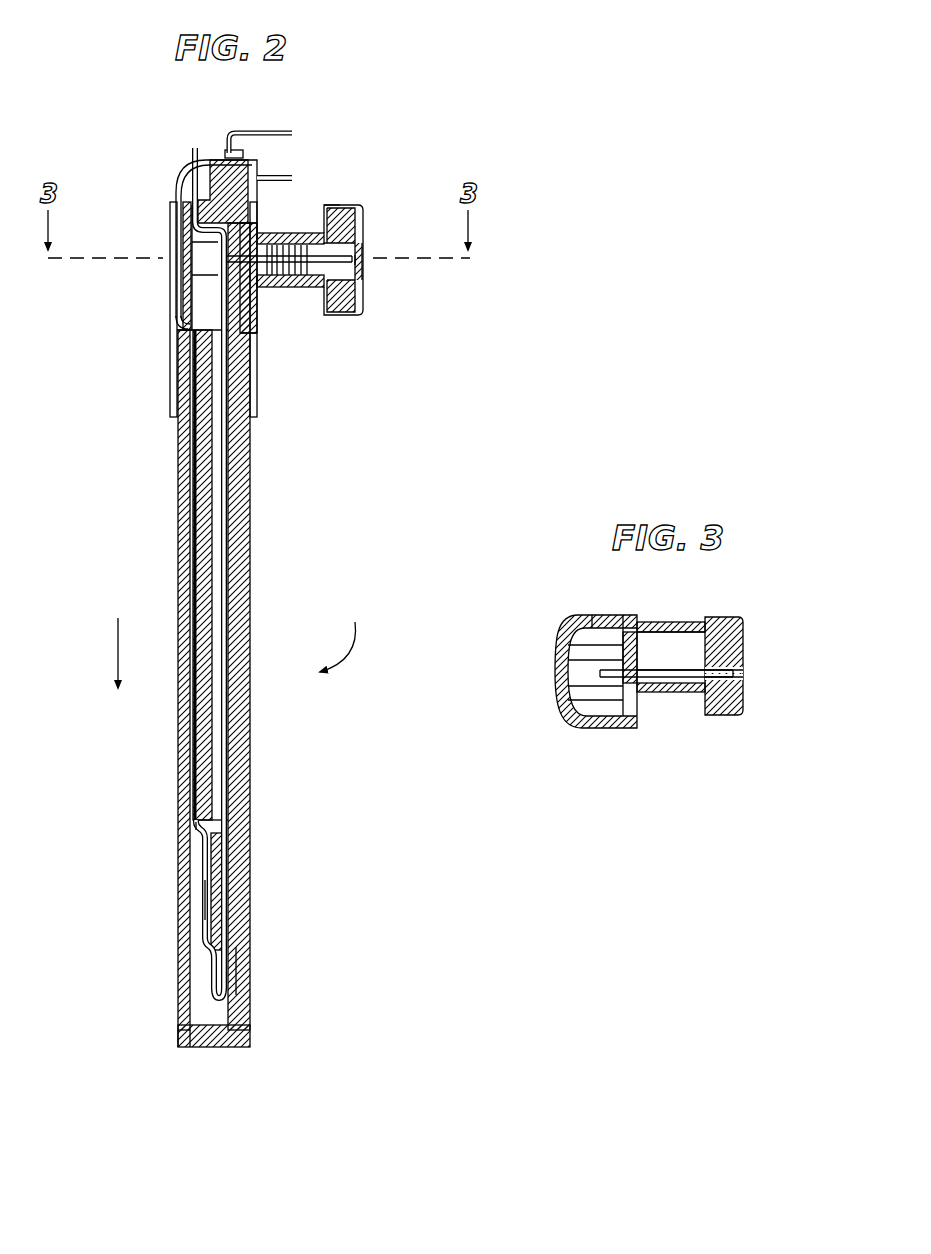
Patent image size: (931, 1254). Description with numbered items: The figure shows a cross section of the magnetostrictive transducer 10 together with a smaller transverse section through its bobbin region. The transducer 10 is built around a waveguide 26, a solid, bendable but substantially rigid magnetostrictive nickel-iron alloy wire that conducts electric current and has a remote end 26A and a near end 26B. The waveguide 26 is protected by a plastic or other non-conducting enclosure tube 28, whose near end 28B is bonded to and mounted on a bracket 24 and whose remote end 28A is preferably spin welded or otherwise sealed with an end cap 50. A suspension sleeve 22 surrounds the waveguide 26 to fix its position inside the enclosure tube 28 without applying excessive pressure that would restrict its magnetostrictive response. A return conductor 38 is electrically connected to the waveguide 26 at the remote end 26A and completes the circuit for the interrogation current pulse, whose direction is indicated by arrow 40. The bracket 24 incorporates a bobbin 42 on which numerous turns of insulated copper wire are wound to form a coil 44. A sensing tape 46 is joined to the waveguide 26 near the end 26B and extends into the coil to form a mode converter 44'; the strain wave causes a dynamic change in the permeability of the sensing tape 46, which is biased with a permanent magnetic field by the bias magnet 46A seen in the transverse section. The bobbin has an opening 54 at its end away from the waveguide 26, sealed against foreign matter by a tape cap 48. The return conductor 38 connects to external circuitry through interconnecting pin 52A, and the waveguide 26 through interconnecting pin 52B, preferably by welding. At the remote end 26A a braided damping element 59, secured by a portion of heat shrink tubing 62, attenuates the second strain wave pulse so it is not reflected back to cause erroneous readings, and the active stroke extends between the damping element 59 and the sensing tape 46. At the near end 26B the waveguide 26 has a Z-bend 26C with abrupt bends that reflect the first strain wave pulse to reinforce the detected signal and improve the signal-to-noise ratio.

In FIG. 2, the magnetostrictive transducer 10 is at (351, 630).
In FIG. 2, the suspension sleeve 22 is at (195, 800).
In FIG. 2, the bracket 24 is at (254, 388).
In FIG. 2, the waveguide 26 is at (218, 572).
In FIG. 2, the remote end of waveguide 26A is at (236, 997).
In FIG. 2, the near end of waveguide 26B is at (194, 148).
In FIG. 2, the Z-bend 26C is at (210, 242).
In FIG. 2, the enclosure tube 28 is at (208, 624).
In FIG. 2, the remote end of enclosure tube 28A is at (185, 1036).
In FIG. 2, the near end of enclosure tube 28B is at (177, 330).
In FIG. 2, the return conductor 38 is at (193, 485).
In FIG. 2, the arrow indicating current direction 40 is at (118, 650).
In FIG. 2, the bobbin 42 is at (308, 232).
In FIG. 2, the coil 44 is at (306, 203).
In FIG. 2, the mode converter 44' is at (336, 303).
In FIG. 2, the sensing tape 46 is at (383, 255).
In FIG. 3, the bias magnet 46A is at (680, 622).
In FIG. 2, the tape cap 48 is at (350, 203).
In FIG. 2, the end cap 50 is at (240, 1047).
In FIG. 2, the interconnecting pin 52A is at (290, 133).
In FIG. 2, the interconnecting pin 52B is at (290, 178).
In FIG. 2, the opening 54 is at (357, 270).
In FIG. 2, the damping element 59 is at (224, 915).
In FIG. 2, the heat shrink tubing 62 is at (192, 898).